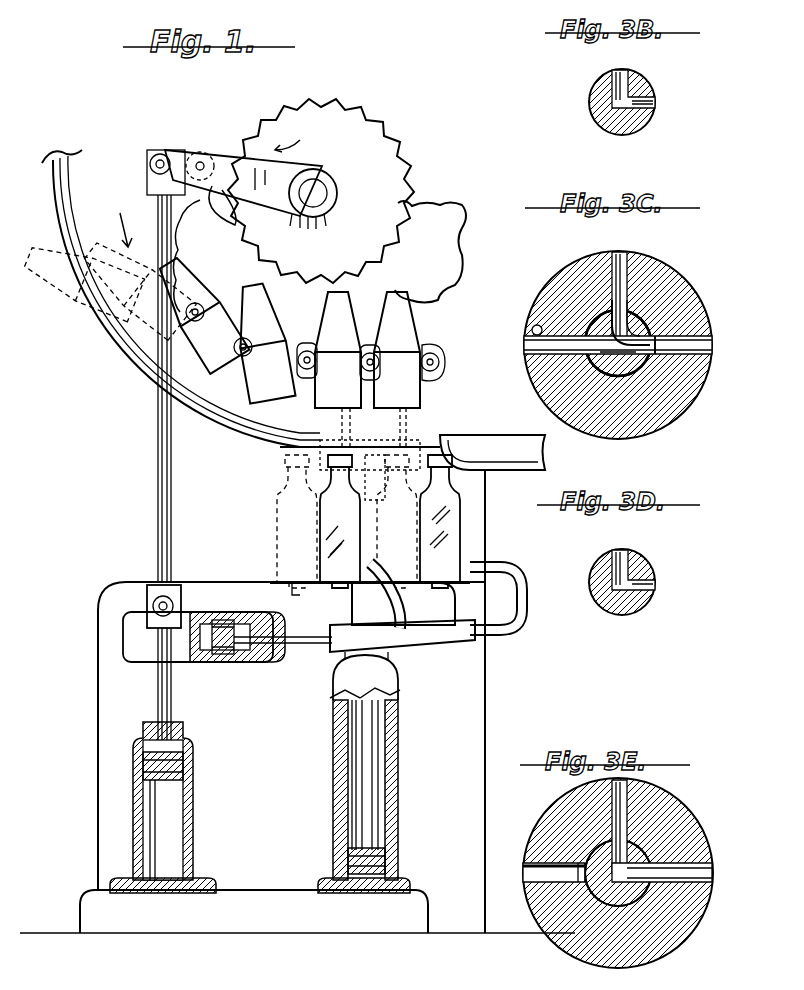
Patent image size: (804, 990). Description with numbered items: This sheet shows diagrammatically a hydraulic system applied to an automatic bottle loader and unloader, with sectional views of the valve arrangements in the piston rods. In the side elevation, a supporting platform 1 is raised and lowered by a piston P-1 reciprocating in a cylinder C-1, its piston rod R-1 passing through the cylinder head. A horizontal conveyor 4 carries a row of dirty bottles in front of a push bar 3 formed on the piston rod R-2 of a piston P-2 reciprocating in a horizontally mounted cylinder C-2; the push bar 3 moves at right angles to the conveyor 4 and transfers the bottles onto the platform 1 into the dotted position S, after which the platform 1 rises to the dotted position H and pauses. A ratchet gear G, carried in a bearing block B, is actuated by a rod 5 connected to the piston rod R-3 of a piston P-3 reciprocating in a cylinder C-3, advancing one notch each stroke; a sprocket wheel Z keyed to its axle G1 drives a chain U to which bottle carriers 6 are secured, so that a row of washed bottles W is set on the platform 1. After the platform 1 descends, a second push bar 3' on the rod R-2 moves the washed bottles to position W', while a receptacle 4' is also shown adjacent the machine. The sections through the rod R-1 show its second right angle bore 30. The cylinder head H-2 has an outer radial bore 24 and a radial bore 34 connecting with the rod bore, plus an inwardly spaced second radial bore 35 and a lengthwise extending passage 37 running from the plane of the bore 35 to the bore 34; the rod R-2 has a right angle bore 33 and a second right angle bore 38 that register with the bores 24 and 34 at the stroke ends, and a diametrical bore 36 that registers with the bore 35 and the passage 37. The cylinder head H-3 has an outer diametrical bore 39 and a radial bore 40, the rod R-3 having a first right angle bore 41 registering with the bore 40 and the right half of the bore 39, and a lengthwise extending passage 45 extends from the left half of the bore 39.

In FIG. 1, the supporting platform 1 is at (328, 585).
In FIG. 1, the push bar 3 is at (471, 542).
In FIG. 1, the push bar 3' is at (401, 583).
In FIG. 1, the horizontal conveyor 4 is at (408, 602).
In FIG. 1, the receptacle 4' is at (277, 596).
In FIG. 1, the rod 5 is at (157, 543).
In FIG. 1, the bottle carriers 6 is at (408, 340).
In FIG. 1, the bearing block B is at (145, 620).
In FIG. 1, the ratchet gear G is at (392, 208).
In FIG. 1, the axle G1 is at (318, 194).
In FIG. 1, the sprocket wheel Z is at (440, 250).
In FIG. 1, the chain U is at (440, 365).
In FIG. 1, the row of washed bottles W is at (181, 298).
In FIG. 1, the position W' is at (303, 521).
In FIG. 1, the position S is at (397, 521).
In FIG. 1, the position H is at (380, 440).
In FIG. 1, the piston rod R-1 is at (364, 785).
In FIG. 3B, the piston rod R-1 is at (602, 108).
In FIG. 1, the piston rod R-2 is at (292, 645).
In FIG. 3C, the piston rod R-2 is at (598, 357).
In FIG. 3D, the piston rod R-2 is at (632, 605).
In FIG. 1, the piston rod R-3 is at (158, 702).
In FIG. 1, the piston P-1 is at (386, 862).
In FIG. 1, the piston P-2 is at (216, 660).
In FIG. 1, the piston P-3 is at (152, 763).
In FIG. 1, the cylinder C-1 is at (393, 805).
In FIG. 1, the cylinder C-2 is at (244, 663).
In FIG. 1, the cylinder C-3 is at (138, 828).
In FIG. 3C, the outer radial bore 24 is at (628, 258).
In FIG. 3B, the second right angle bore 30 is at (641, 100).
In FIG. 3D, the right angle bore 33 is at (645, 574).
In FIG. 3C, the radial bore 34 is at (662, 338).
In FIG. 3C, the second radial bore 35 is at (533, 330).
In FIG. 3C, the diametrical bore 36 is at (624, 385).
In FIG. 3C, the lengthwise extending passage 37 is at (690, 348).
In FIG. 3C, the second right angle bore 38 is at (640, 320).
In FIG. 3E, the outer diametrical bore 39 is at (545, 865).
In FIG. 3E, the radial bore 40 is at (620, 800).
In FIG. 3E, the first right angle bore 41 is at (628, 855).
In FIG. 3E, the lengthwise extending passage 45 is at (580, 880).
In FIG. 3C, the cylinder head H-2 is at (672, 410).
In FIG. 3E, the cylinder head H-3 is at (560, 812).